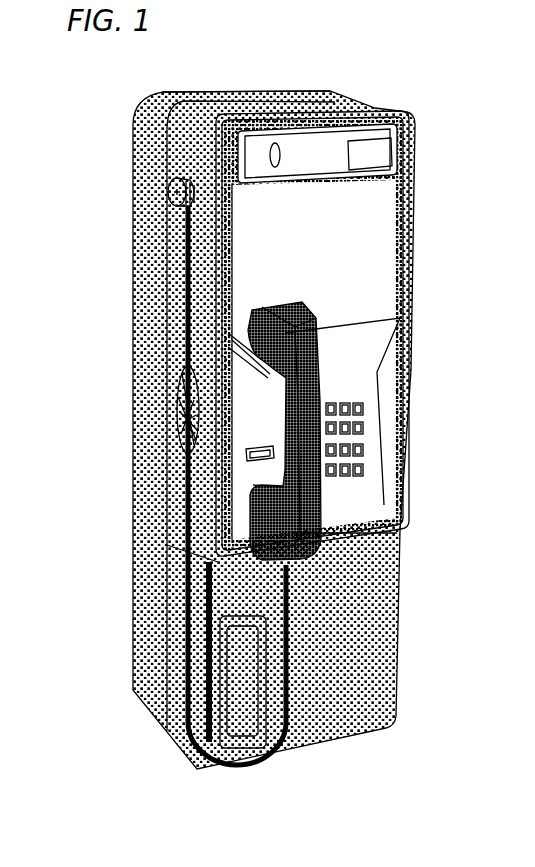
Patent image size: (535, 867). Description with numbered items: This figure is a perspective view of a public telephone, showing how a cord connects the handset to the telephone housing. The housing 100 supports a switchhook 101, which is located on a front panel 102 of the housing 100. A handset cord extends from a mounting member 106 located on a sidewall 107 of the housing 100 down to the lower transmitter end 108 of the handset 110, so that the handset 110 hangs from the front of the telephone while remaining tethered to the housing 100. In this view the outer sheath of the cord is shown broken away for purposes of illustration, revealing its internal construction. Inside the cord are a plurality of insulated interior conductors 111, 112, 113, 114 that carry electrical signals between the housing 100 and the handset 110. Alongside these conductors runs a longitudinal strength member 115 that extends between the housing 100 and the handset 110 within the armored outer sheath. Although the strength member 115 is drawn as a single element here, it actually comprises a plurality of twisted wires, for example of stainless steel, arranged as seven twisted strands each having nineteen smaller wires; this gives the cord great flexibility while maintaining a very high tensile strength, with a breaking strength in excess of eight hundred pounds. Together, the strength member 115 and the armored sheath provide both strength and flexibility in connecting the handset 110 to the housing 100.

The housing 100 is at (132, 130).
The switchhook 101 is at (240, 334).
The front panel 102 is at (397, 253).
The mounting member 106 is at (175, 196).
The sidewall 107 is at (187, 112).
The lower transmitter end 108 is at (325, 519).
The handset 110 is at (316, 331).
The insulated interior conductor 111 is at (182, 373).
The insulated interior conductor 112 is at (178, 397).
The insulated interior conductor 113 is at (180, 412).
The insulated interior conductor 114 is at (183, 423).
The longitudinal strength member 115 is at (181, 434).